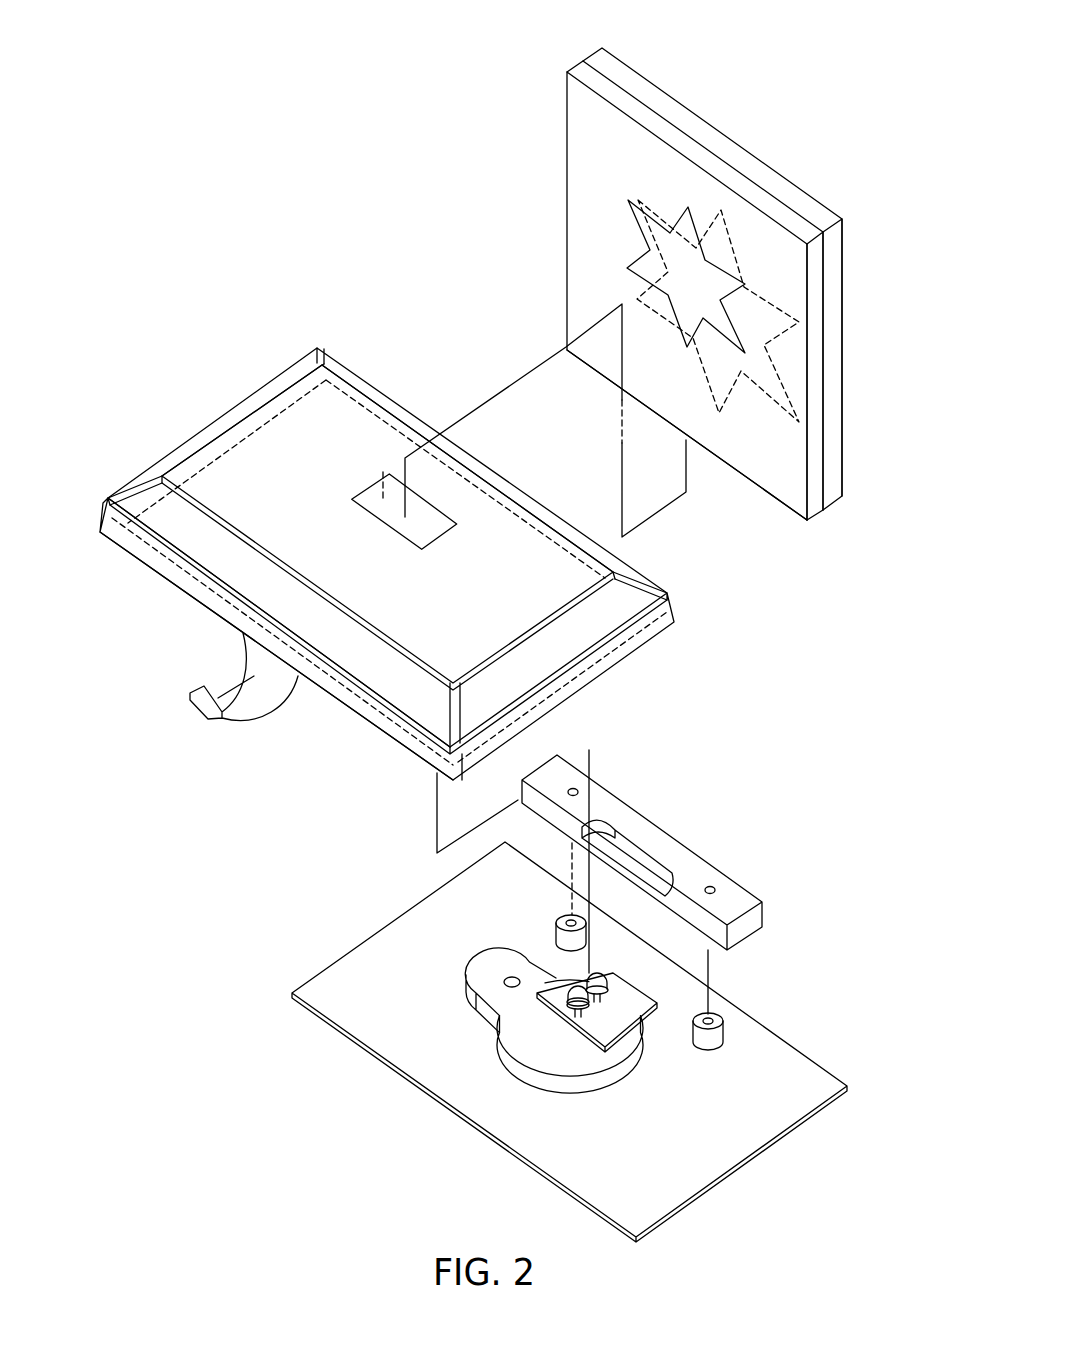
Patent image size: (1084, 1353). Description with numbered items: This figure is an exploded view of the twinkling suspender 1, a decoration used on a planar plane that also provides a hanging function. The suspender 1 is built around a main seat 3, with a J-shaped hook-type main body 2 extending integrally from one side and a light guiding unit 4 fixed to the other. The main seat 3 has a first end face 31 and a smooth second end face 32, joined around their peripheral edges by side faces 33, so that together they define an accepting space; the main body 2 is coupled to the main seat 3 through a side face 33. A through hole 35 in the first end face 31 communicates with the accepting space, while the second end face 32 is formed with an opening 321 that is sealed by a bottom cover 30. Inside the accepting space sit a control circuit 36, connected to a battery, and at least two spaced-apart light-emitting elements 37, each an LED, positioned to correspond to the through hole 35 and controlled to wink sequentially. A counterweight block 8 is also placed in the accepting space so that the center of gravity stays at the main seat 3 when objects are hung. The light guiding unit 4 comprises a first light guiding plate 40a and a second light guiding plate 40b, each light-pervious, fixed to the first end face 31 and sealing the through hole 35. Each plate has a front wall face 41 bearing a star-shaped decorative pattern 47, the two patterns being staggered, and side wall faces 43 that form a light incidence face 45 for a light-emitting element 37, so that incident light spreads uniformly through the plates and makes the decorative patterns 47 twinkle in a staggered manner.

The twinkling suspender 1 is at (236, 147).
The main body 2 is at (255, 702).
The main seat 3 is at (260, 398).
The light guiding unit 4 is at (689, 297).
The counterweight block 8 is at (680, 856).
The bottom cover 30 is at (363, 1052).
The first end face 31 is at (563, 580).
The second end face 32 is at (568, 702).
The side faces 33 is at (213, 603).
The through hole 35 is at (384, 472).
The control circuit 36 is at (550, 988).
The light-emitting elements 37 is at (586, 976).
The first light guiding plate 40a is at (608, 95).
The second light guiding plate 40b is at (656, 99).
The front wall face 41 is at (576, 167).
The side wall faces 43 is at (832, 375).
The light incidence face 45 is at (762, 492).
The decorative pattern 47 is at (650, 280).
The opening 321 is at (643, 571).